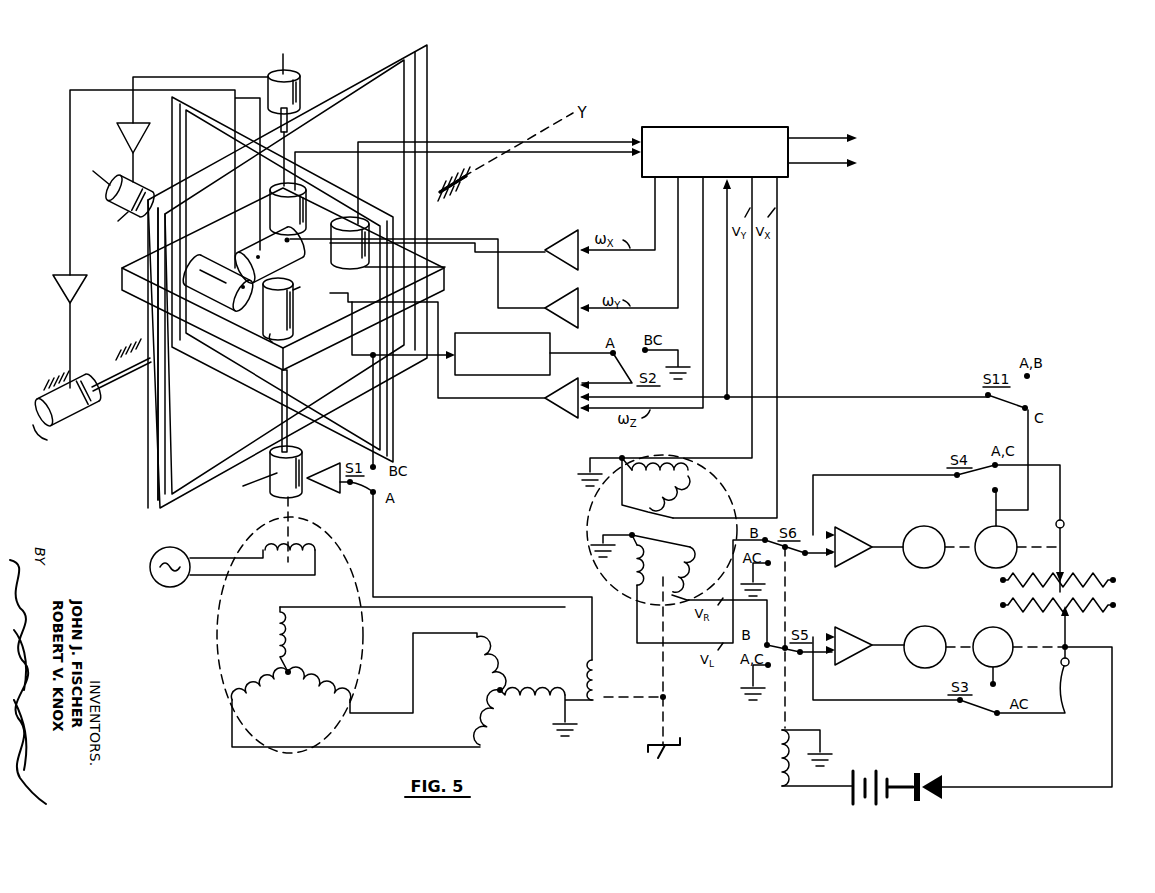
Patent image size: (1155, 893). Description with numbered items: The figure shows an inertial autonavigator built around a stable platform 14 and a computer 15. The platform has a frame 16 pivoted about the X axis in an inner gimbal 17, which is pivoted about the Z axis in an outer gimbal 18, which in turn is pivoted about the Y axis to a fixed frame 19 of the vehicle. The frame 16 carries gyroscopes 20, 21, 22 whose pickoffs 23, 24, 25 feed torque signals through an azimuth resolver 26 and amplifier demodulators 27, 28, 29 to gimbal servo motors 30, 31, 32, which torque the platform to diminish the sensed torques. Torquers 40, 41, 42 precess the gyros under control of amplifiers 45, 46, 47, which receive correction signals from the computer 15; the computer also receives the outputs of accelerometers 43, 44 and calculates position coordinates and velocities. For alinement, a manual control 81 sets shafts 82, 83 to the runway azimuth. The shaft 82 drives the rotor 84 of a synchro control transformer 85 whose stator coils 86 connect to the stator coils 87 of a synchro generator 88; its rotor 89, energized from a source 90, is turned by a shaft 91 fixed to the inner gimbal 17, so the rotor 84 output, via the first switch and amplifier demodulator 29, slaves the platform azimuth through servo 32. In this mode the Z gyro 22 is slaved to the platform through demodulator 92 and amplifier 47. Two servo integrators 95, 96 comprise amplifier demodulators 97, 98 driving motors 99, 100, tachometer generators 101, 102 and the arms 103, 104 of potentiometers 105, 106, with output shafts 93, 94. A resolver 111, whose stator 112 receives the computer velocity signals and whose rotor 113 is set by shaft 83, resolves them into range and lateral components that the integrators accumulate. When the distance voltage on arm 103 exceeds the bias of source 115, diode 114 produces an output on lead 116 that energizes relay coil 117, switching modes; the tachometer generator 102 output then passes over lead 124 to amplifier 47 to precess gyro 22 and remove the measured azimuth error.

The stable platform 14 is at (456, 131).
The computer 15 is at (713, 133).
The frame or support 16 is at (300, 352).
The inner gimbal 17 is at (178, 127).
The outer gimbal 18 is at (165, 440).
The fixed frame or support 19 is at (462, 184).
The gyroscope 20 is at (213, 292).
The gyroscope 21 is at (287, 263).
The Z axis gyroscope 22 is at (295, 310).
The pickoff 23 is at (243, 289).
The pickoff 24 is at (257, 256).
The pickoff 25 is at (270, 332).
The azimuth resolver 26 is at (302, 92).
The amplifier demodulator 27 is at (120, 124).
The amplifier demodulator 28 is at (54, 284).
The amplifier demodulator 29 is at (328, 467).
The X axis servo motor 30 is at (118, 198).
The Y axis servo motor 31 is at (90, 407).
The Z axis servo motor 32 is at (302, 467).
The torquer 40 is at (208, 268).
The torquer 41 is at (290, 240).
The torquer 42 is at (300, 287).
The accelerometer 43 is at (352, 226).
The accelerometer 44 is at (288, 193).
The amplifier 45 is at (567, 237).
The amplifier 46 is at (567, 294).
The amplifier 47 is at (560, 410).
The manual control 81 is at (664, 759).
The shaft 82 is at (609, 697).
The shaft 83 is at (667, 667).
The rotor 84 is at (598, 678).
The synchro control transformer 85 is at (522, 670).
The stator coils 86 is at (501, 704).
The stator coils 87 is at (300, 632).
The synchro generator 88 is at (211, 704).
The rotor 89 is at (310, 537).
The source of potential 90 is at (175, 587).
The shaft 91 is at (289, 497).
The demodulator 92 is at (518, 335).
The output shaft 93 is at (1047, 643).
The output shaft 94 is at (1053, 545).
The servo integrator 95 is at (897, 618).
The servo integrator 96 is at (889, 530).
The amplifier demodulator 97 is at (845, 629).
The amplifier demodulator 98 is at (840, 527).
The motor 99 is at (933, 634).
The motor 100 is at (915, 555).
The tachometer generator 101 is at (990, 635).
The tachometer generator 102 is at (997, 560).
The potentiometer arm 103 is at (1067, 631).
The potentiometer arm 104 is at (1057, 560).
The potentiometer 105 is at (1097, 606).
The storage potentiometer 106 is at (1085, 578).
The resolver 111 is at (620, 446).
The stator 112 is at (635, 510).
The rotor 113 is at (640, 553).
The diode 114 is at (932, 777).
The source of potential 115 is at (864, 763).
The lead 116 is at (841, 788).
The relay coil 117 is at (777, 751).
The lead 124 is at (897, 394).